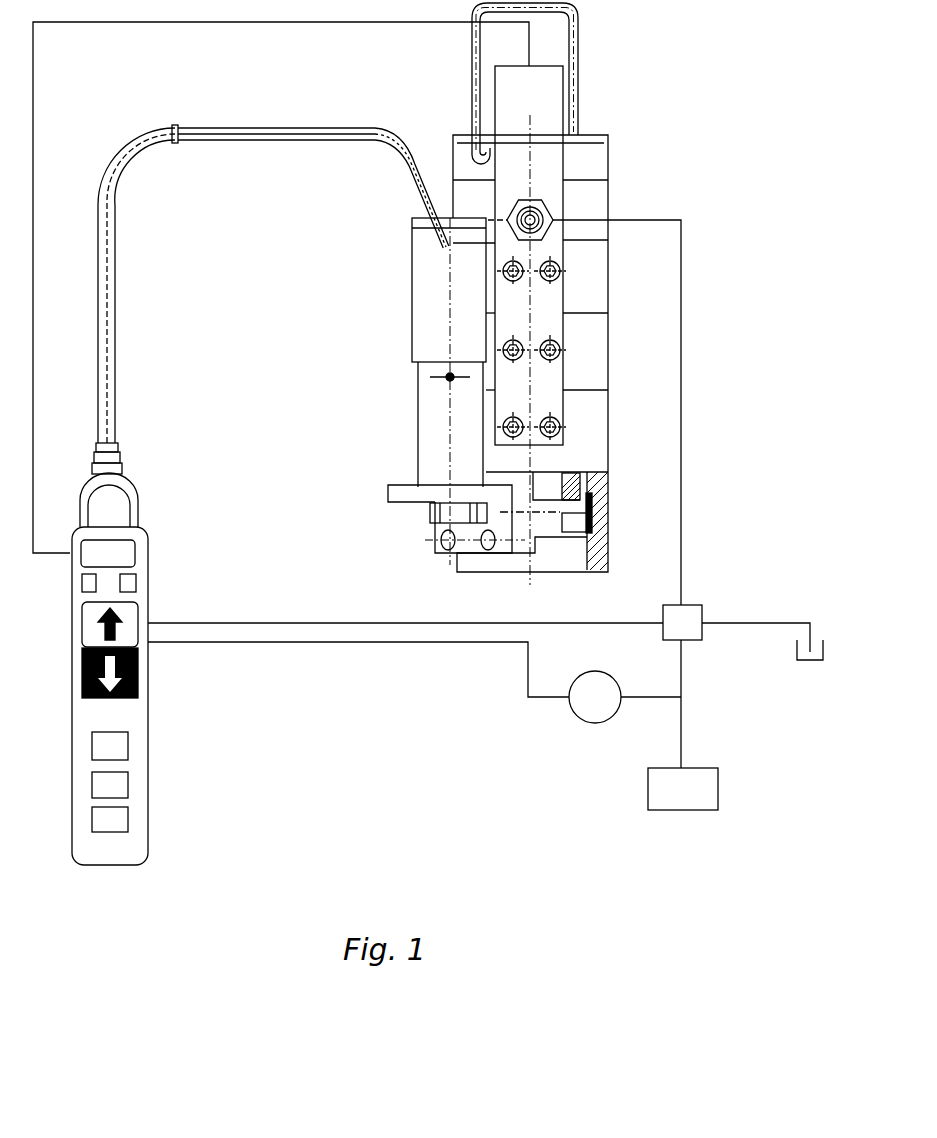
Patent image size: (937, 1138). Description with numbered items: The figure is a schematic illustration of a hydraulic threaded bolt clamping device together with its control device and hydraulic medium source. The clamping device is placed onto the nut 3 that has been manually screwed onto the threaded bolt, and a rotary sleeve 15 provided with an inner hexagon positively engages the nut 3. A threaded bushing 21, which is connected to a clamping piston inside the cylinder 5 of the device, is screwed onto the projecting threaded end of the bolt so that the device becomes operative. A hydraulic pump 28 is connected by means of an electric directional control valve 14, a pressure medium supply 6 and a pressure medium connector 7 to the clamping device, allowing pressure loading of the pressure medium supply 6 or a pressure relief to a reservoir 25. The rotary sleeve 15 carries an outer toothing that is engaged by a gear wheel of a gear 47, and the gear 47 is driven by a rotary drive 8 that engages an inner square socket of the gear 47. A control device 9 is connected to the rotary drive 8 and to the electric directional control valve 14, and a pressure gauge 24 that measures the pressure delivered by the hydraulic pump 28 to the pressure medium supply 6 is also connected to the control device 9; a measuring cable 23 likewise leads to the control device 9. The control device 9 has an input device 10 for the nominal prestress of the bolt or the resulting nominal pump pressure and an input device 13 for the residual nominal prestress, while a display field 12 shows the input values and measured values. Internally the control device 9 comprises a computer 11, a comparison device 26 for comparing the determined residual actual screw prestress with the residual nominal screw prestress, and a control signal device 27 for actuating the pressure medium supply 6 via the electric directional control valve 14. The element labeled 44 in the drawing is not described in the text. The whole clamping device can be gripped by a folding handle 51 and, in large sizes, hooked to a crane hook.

The nut 3 is at (582, 518).
The cylinder 5 is at (607, 350).
The pressure medium supply 6 is at (682, 275).
The pressure medium connector 7 is at (548, 207).
The rotary drive 8 is at (423, 387).
The control device 9 is at (146, 725).
The input device 10 is at (137, 585).
The computer 11 is at (92, 748).
The display field 12 is at (130, 540).
The input device 13 is at (81, 585).
The electric directional control valve 14 is at (702, 605).
The rotary sleeve 15 is at (597, 490).
The threaded bushing 21 is at (592, 471).
The measuring cable 23 is at (285, 22).
The pressure gauge 24 is at (578, 722).
The reservoir 25 is at (826, 650).
The comparison device 26 is at (128, 786).
The control signal device 27 is at (128, 820).
The hydraulic pump 28 is at (712, 768).
The pressure plate 44 is at (556, 297).
The gear 47 is at (432, 515).
The folding handle 51 is at (578, 70).